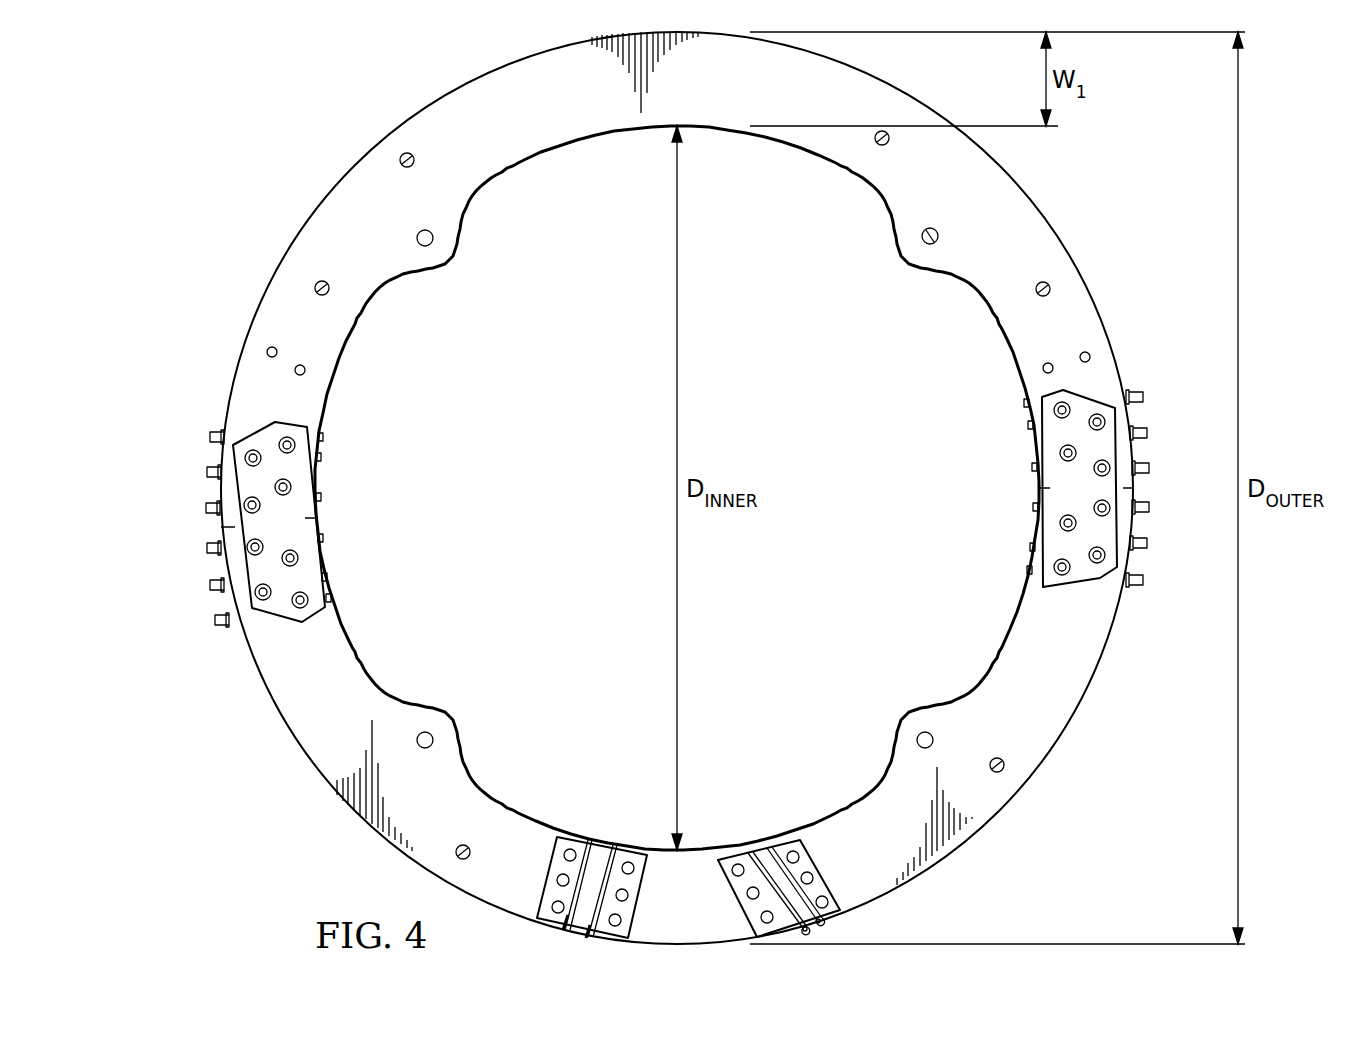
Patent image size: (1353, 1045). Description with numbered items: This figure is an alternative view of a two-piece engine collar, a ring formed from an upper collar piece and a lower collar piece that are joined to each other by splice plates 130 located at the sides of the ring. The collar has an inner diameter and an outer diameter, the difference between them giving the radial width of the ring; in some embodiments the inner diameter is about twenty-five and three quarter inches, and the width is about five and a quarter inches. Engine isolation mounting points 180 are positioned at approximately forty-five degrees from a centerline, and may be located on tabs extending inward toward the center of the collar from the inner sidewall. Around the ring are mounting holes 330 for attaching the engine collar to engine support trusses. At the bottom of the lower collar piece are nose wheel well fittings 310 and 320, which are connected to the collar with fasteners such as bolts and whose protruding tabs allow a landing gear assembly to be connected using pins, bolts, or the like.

The splice plates 130 is at (1052, 433).
The engine isolation mounting points 180 is at (935, 228).
The nose wheel well fitting 310 is at (548, 840).
The nose wheel well fitting 320 is at (827, 870).
The mounting holes 330 is at (414, 158).